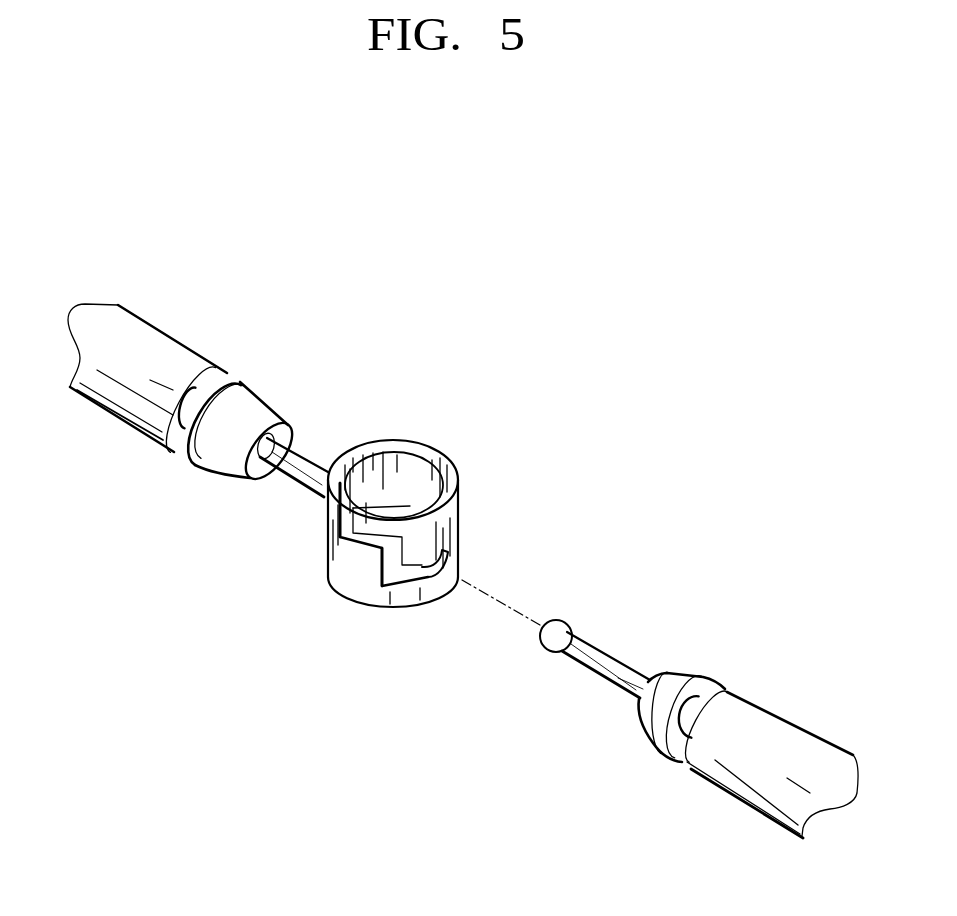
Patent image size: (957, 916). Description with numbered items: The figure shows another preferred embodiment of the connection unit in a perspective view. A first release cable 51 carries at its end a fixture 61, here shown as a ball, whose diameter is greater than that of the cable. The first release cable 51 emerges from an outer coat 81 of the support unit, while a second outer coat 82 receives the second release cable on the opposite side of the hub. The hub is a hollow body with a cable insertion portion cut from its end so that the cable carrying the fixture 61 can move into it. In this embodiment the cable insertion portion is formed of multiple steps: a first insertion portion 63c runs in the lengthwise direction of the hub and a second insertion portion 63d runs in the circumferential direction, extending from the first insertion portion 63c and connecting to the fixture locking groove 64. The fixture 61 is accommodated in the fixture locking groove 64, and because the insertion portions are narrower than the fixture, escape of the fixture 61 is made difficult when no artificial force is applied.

The outer coat 82 is at (163, 337).
The first insertion portion 63c is at (390, 567).
The second insertion portion 63d is at (413, 568).
The fixture locking groove 64 is at (447, 563).
The fixture 61 is at (566, 621).
The first release cable 51 is at (617, 657).
The outer coat 81 is at (788, 727).